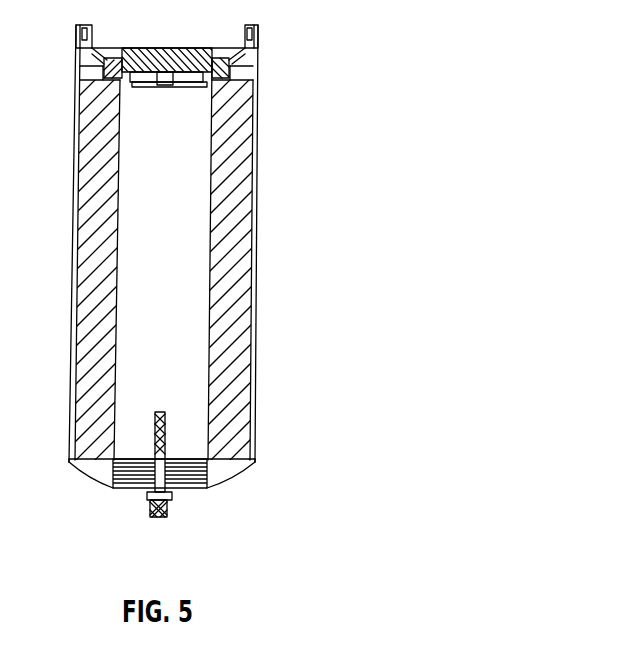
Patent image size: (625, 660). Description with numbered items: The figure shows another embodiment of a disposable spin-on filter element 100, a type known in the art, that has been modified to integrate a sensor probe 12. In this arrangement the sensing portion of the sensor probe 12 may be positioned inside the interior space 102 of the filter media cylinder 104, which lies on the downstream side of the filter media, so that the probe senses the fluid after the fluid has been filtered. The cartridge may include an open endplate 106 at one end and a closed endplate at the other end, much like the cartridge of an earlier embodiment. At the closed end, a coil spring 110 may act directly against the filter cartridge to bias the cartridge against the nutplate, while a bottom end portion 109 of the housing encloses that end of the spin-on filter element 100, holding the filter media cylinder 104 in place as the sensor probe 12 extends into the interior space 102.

The disposable spin-on filter element 100 is at (281, 173).
The interior space 102 is at (182, 262).
The filter media cylinder 104 is at (253, 357).
The open endplate 106 is at (258, 72).
The bottom end cap 109 is at (232, 464).
The coil spring 110 is at (206, 482).
The sensor probe 12 is at (173, 530).